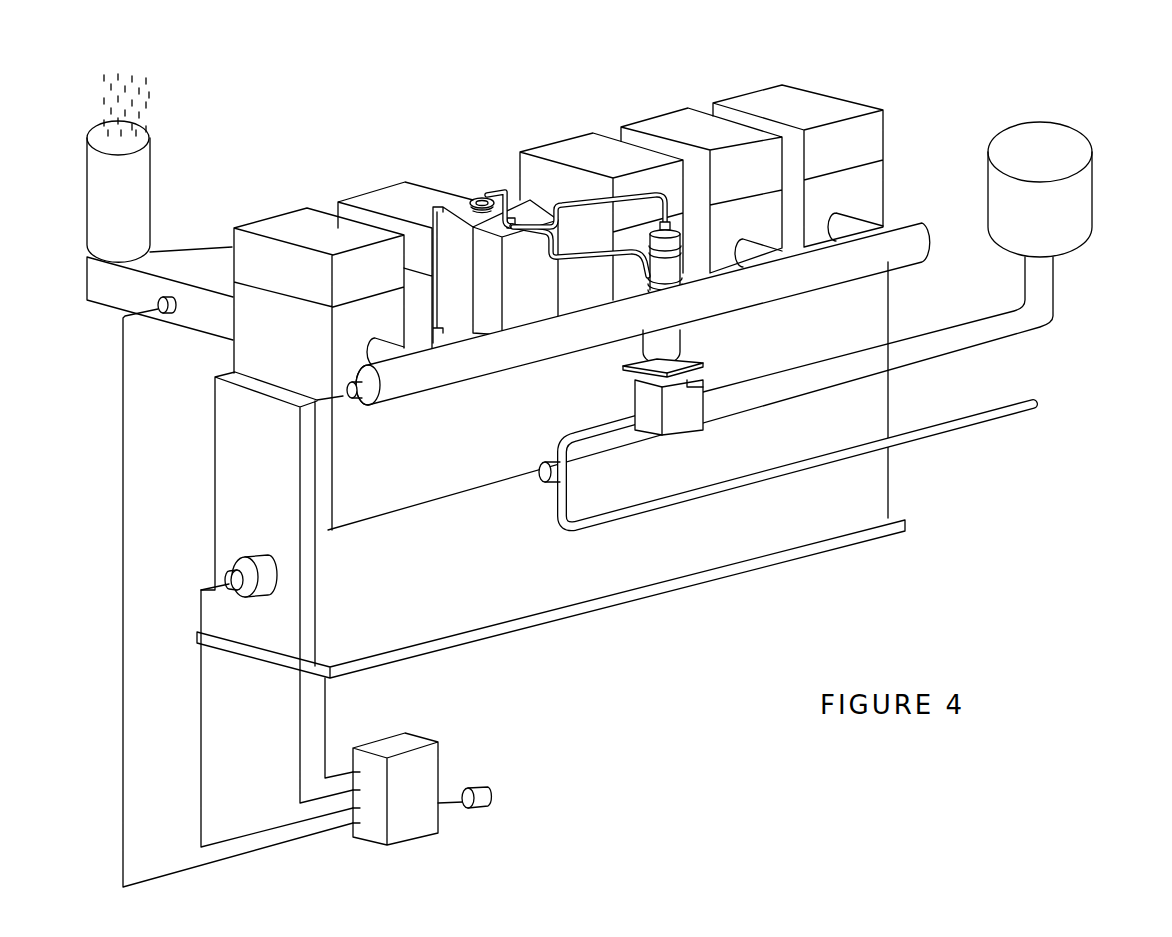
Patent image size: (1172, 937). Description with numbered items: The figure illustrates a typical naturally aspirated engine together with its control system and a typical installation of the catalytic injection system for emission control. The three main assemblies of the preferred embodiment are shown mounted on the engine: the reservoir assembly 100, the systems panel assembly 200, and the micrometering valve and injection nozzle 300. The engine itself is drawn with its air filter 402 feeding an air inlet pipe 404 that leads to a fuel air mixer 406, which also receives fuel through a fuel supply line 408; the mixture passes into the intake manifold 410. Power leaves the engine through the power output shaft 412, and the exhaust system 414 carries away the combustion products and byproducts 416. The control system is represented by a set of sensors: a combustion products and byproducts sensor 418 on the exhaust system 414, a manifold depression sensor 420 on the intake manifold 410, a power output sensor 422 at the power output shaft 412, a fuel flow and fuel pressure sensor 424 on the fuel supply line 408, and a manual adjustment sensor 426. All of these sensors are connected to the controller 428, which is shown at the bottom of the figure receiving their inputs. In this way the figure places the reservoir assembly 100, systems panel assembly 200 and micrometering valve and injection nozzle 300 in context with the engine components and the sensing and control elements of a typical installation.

The reservoir assembly 100 is at (482, 196).
The systems panel assembly 200 is at (540, 210).
The micrometering valve and injection nozzle 300 is at (662, 184).
The air filter 402 is at (1093, 198).
The air inlet pipe 404 is at (822, 357).
The fuel air mixer 406 is at (697, 432).
The fuel supply line 408 is at (958, 432).
The intake manifold 410 is at (918, 222).
The power output shaft 412 is at (253, 557).
The exhaust system 414 is at (202, 246).
The combustion products and byproducts 416 is at (150, 95).
The combustion products and byproducts sensor 418 is at (172, 319).
The manifold depression sensor 420 is at (357, 403).
The power output sensor 422 is at (237, 591).
The fuel flow and fuel pressure sensor 424 is at (553, 461).
The manual adjustment sensor 426 is at (487, 783).
The controller 428 is at (372, 739).